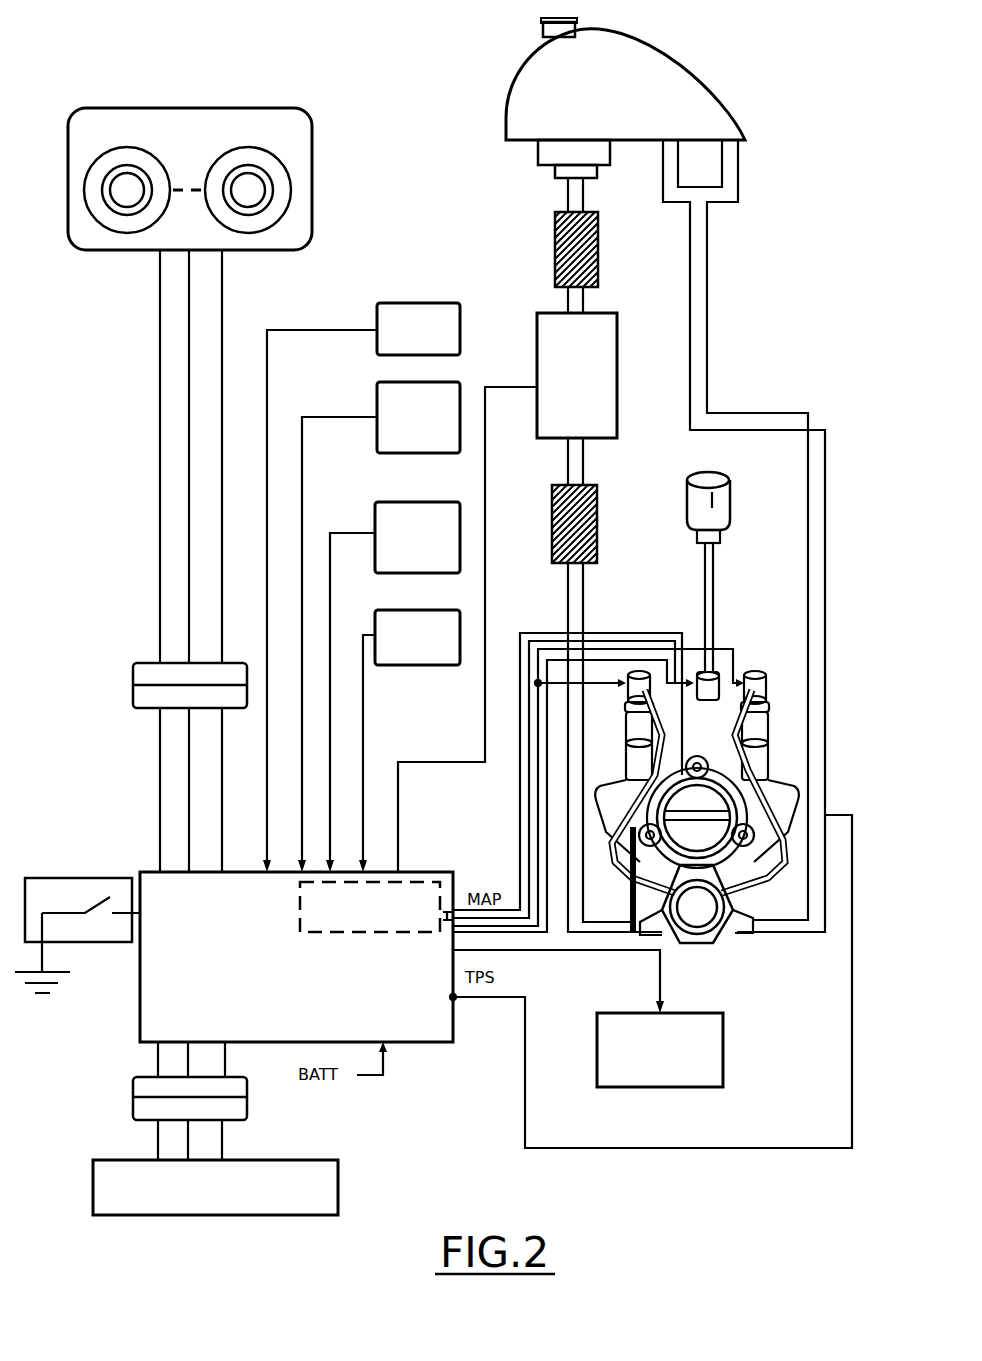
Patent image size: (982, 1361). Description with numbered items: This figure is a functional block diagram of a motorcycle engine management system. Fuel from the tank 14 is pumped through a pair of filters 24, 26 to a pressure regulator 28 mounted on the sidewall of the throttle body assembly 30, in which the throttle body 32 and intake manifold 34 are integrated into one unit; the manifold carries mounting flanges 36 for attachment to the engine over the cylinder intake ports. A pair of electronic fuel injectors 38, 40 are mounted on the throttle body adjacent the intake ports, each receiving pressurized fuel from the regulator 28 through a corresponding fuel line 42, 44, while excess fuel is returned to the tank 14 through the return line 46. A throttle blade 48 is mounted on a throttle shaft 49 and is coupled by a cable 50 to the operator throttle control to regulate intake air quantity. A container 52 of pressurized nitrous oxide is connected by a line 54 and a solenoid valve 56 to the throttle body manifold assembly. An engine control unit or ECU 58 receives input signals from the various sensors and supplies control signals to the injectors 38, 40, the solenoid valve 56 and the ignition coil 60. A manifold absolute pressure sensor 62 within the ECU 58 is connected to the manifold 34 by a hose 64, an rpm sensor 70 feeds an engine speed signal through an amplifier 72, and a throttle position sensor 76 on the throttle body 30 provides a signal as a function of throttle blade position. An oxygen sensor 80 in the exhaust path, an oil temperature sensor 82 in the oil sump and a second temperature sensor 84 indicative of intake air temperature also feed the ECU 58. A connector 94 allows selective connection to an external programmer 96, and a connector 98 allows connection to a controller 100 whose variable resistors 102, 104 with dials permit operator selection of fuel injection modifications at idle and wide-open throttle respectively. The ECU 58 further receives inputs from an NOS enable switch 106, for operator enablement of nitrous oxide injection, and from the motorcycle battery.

The tank 14 is at (712, 97).
The filter 24 is at (555, 227).
The filter 26 is at (597, 507).
The pressure regulator 28 is at (697, 940).
The throttle body assembly 30 is at (797, 771).
The throttle body 32 is at (705, 835).
The intake manifold 34 is at (777, 802).
The mounting flanges 36 is at (783, 822).
The electronic fuel injector 38 is at (763, 700).
The electronic fuel injector 40 is at (628, 725).
The fuel line 42 is at (780, 867).
The fuel line 44 is at (615, 880).
The return line 46 is at (781, 412).
The throttle blade 48 is at (700, 867).
The throttle shaft 49 is at (708, 813).
The cable 50 is at (631, 942).
The container 52 is at (725, 487).
The line 54 is at (716, 582).
The solenoid valve 56 is at (723, 667).
The engine control unit 58 is at (432, 1047).
The ignition coil 60 is at (727, 1058).
The manifold absolute pressure sensor 62 is at (400, 933).
The hose 64 is at (641, 633).
The rpm sensor 70 is at (435, 303).
The amplifier 72 is at (617, 345).
The throttle position sensor 76 is at (783, 840).
The oxygen sensor 80 is at (405, 667).
The oil temperature sensor 82 is at (376, 504).
The second temperature sensor 84 is at (376, 384).
The connector 94 is at (137, 1085).
The external programmer 96 is at (237, 1217).
The connector 98 is at (133, 665).
The controller 100 is at (267, 108).
The variable resistor 102 is at (135, 227).
The variable resistor 104 is at (283, 182).
The NOS enable switch 106 is at (107, 945).